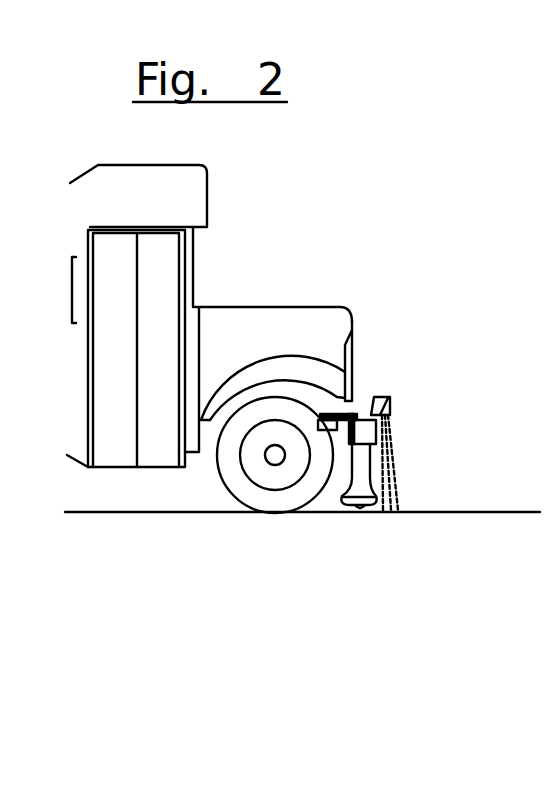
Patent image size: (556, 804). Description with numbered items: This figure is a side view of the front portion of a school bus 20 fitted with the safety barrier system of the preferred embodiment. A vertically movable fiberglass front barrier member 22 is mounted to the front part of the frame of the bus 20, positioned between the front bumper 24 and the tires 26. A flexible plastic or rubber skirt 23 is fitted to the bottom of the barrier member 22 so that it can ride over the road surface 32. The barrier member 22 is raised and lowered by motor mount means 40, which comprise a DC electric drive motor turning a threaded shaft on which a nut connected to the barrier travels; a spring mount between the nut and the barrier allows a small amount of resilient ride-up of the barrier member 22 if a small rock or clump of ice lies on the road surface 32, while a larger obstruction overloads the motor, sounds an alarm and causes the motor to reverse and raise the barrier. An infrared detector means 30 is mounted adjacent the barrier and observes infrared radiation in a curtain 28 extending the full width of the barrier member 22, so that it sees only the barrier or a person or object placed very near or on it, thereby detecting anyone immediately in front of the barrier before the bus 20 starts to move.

The school bus 20 is at (275, 327).
The front barrier member 22 is at (355, 481).
The skirt 23 is at (360, 503).
The front bumper 24 is at (362, 420).
The tires 26 is at (258, 494).
The curtain 28 is at (387, 452).
The infrared detector means 30 is at (390, 397).
The road surface 32 is at (178, 512).
The motor mount means 40 is at (352, 338).